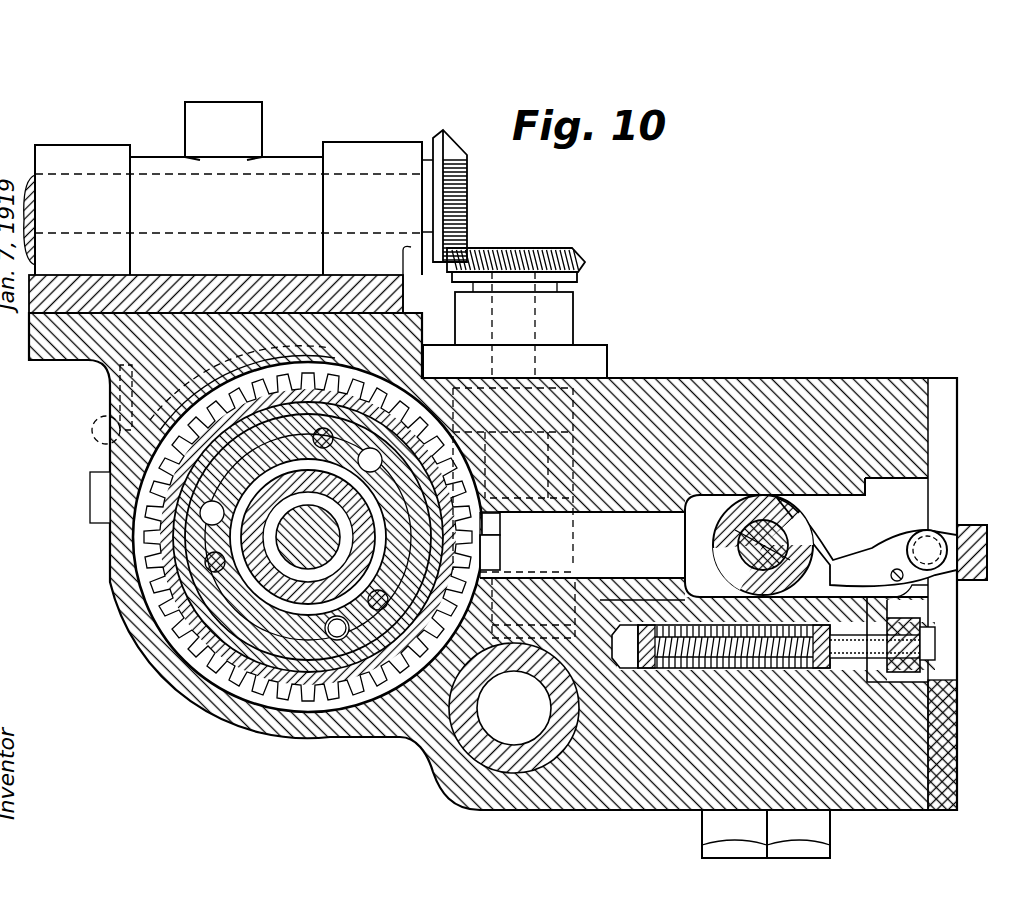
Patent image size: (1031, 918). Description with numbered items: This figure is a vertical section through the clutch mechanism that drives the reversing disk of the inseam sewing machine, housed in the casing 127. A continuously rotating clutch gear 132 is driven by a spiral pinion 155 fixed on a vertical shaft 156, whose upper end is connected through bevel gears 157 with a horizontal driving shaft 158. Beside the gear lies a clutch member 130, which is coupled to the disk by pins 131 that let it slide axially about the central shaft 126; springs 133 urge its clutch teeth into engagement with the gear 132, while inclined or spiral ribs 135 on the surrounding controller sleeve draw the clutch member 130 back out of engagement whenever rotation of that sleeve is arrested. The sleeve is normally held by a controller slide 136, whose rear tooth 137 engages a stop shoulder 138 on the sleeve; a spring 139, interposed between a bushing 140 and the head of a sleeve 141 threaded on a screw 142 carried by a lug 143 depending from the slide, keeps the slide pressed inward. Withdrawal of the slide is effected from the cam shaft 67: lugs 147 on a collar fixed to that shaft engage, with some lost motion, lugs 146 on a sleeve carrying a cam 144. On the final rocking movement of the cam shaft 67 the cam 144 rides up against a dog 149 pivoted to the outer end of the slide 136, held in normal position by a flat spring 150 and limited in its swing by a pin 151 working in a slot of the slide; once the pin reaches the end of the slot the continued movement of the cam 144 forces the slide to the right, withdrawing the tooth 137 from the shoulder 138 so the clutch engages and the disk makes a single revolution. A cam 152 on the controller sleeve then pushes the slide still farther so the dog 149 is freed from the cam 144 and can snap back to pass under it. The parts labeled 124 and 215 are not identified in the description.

The horizontal driving shaft 158 is at (275, 200).
The bevel gears 157 is at (465, 204).
The vertical shaft 156 is at (518, 325).
The cam 152 is at (448, 378).
The housing top surface 215 is at (598, 380).
The stop shoulder 138 is at (477, 528).
The projecting tooth 137 is at (478, 548).
The spiral pinion 155 is at (522, 685).
The spring 139 is at (668, 627).
The lugs 146 is at (717, 532).
The cam shaft 67 is at (747, 548).
The lugs 147 is at (782, 500).
The cam 144 is at (817, 555).
The flat spring 150 is at (957, 560).
The dog 149 is at (903, 578).
The pin 151 is at (920, 582).
The lug 143 is at (920, 668).
The bushing 140 is at (873, 680).
The sleeve 141 is at (643, 668).
The screw 142 is at (745, 645).
The controller slide 136 is at (514, 708).
The springs 133 is at (348, 640).
The shaft 126 is at (308, 553).
The clutch member 130 is at (230, 617).
The pins 131 is at (222, 612).
The clutch gear 132 is at (170, 637).
The casing 127 is at (153, 637).
The gear wheel 124 is at (178, 584).
The inclined or spiral ribs 135 is at (173, 530).